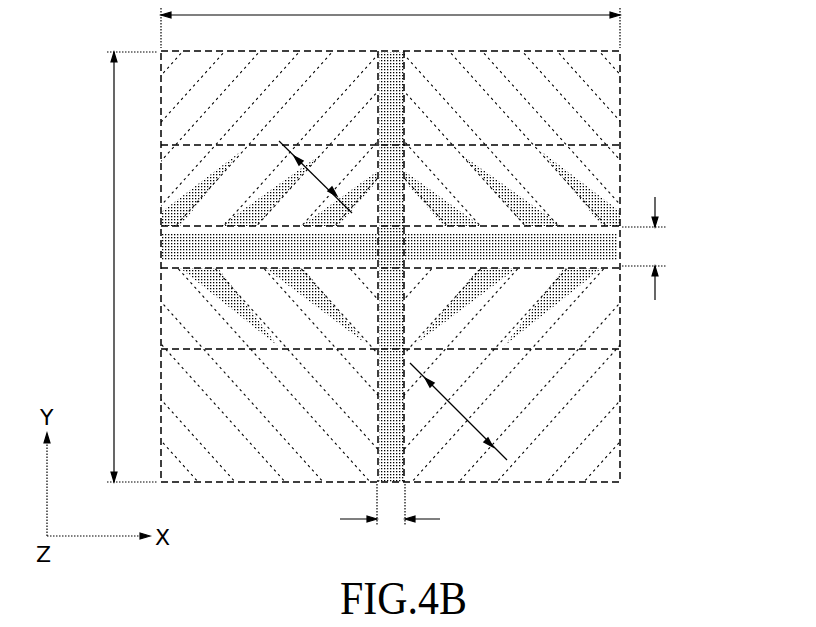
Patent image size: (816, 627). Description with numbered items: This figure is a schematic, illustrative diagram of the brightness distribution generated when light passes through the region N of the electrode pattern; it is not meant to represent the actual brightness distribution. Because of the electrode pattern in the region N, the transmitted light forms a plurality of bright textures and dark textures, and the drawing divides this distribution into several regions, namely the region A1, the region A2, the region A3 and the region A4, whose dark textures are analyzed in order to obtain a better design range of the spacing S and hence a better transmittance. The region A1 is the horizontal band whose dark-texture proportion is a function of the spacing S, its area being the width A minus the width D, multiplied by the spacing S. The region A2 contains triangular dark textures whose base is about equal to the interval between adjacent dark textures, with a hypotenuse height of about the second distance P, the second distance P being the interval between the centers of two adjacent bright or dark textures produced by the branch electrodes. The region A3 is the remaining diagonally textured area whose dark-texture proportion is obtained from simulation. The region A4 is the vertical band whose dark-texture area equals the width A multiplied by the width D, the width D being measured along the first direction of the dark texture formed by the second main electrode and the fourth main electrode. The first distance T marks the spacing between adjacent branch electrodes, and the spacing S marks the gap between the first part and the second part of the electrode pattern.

The region A1 is at (390, 247).
The region A2 is at (173, 176).
The region A3 is at (272, 62).
The region A4 is at (391, 266).
The width A is at (355, 241).
The spacing S is at (644, 248).
The width D is at (390, 505).
The first distance T is at (315, 177).
The second distance P is at (458, 411).